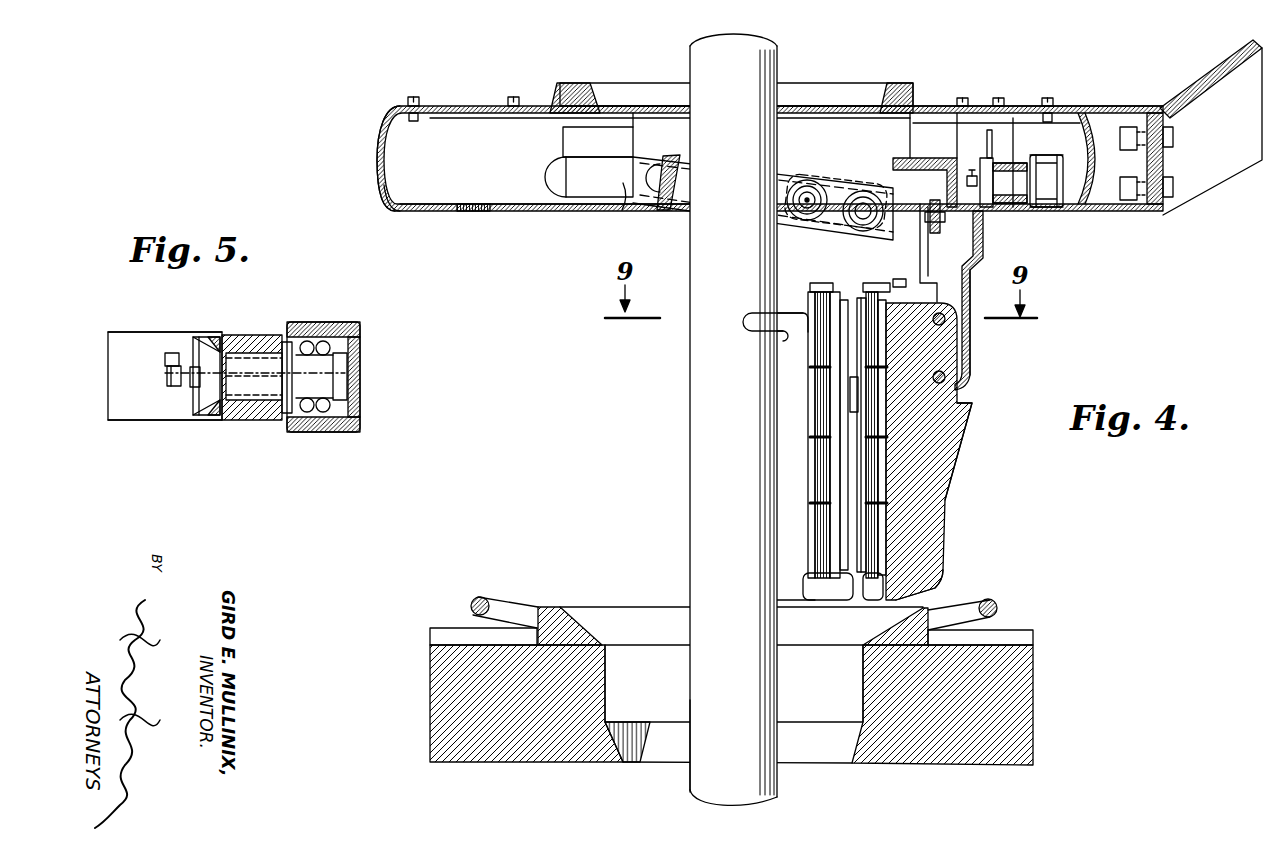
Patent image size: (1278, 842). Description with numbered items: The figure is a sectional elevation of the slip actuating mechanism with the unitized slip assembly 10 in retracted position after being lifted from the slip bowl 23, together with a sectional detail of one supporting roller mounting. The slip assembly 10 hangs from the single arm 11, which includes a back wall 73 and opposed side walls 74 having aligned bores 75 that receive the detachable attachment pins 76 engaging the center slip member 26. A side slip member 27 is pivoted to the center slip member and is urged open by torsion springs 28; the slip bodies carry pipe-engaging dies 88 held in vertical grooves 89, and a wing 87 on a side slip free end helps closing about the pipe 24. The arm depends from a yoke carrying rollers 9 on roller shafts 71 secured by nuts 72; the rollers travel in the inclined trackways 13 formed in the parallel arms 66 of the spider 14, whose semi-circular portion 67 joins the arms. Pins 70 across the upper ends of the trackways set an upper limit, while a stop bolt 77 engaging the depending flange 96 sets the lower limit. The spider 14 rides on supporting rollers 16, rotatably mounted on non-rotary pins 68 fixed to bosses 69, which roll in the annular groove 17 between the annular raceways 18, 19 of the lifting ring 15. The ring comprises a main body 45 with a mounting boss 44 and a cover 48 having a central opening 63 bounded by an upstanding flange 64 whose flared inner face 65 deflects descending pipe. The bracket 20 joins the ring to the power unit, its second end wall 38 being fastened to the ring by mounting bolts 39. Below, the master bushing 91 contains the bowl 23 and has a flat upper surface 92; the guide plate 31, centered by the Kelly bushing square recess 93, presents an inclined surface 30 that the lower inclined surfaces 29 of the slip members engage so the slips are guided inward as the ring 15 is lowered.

In FIG. 4, the rollers 9 is at (806, 197).
In FIG. 4, the unitized slip assembly 10 is at (960, 485).
In FIG. 4, the arm 11 is at (978, 352).
In FIG. 4, the inclined trackways 13 is at (850, 182).
In FIG. 4, the spider 14 is at (597, 185).
In FIG. 5, the spider 14 is at (150, 346).
In FIG. 4, the lifting ring 15 is at (372, 176).
In FIG. 5, the supporting rollers 16 is at (330, 330).
In FIG. 4, the annular groove 17 is at (400, 150).
In FIG. 4, the annular raceway 18 is at (430, 204).
In FIG. 4, the annular raceway 19 is at (428, 116).
In FIG. 4, the bracket 20 is at (1208, 95).
In FIG. 4, the slip bowl 23 is at (850, 757).
In FIG. 4, the pipe 24 is at (697, 453).
In FIG. 4, the center slip member 26 is at (943, 517).
In FIG. 4, the side slip member 27 is at (808, 444).
In FIG. 4, the torsion springs 28 is at (858, 395).
In FIG. 4, the lower inclined surfaces 29 is at (928, 584).
In FIG. 4, the inclined surface 30 is at (580, 622).
In FIG. 4, the guide plate 31 is at (552, 615).
In FIG. 4, the second end wall 38 is at (1160, 165).
In FIG. 4, the mounting bolts 39 is at (1173, 189).
In FIG. 4, the mounting boss 44 is at (1110, 204).
In FIG. 4, the main body 45 is at (386, 204).
In FIG. 4, the cover 48 is at (980, 106).
In FIG. 4, the central opening 63 is at (578, 96).
In FIG. 4, the upstanding flange 64 is at (918, 96).
In FIG. 4, the inner face 65 is at (898, 92).
In FIG. 4, the arms 66 is at (627, 192).
In FIG. 5, the semi-circular portion 67 is at (160, 408).
In FIG. 5, the non-rotary pins 68 is at (250, 398).
In FIG. 4, the bosses 69 is at (1004, 160).
In FIG. 5, the bosses 69 is at (268, 405).
In FIG. 4, the pins 70 is at (668, 168).
In FIG. 4, the roller shafts 71 is at (812, 192).
In FIG. 4, the nuts 72 is at (810, 218).
In FIG. 4, the back wall 73 is at (952, 286).
In FIG. 4, the side walls 74 is at (983, 243).
In FIG. 4, the aligned bores 75 is at (946, 322).
In FIG. 4, the attachment pins 76 is at (946, 380).
In FIG. 4, the stop bolt 77 is at (932, 205).
In FIG. 4, the wing 87 is at (790, 325).
In FIG. 4, the dies 88 is at (880, 428).
In FIG. 4, the vertical grooves 89 is at (885, 455).
In FIG. 4, the master bushing 91 is at (958, 752).
In FIG. 4, the flat upper surface 92 is at (1010, 642).
In FIG. 4, the Kelly bushing square recess 93 is at (860, 690).
In FIG. 4, the depending flange 96 is at (938, 168).